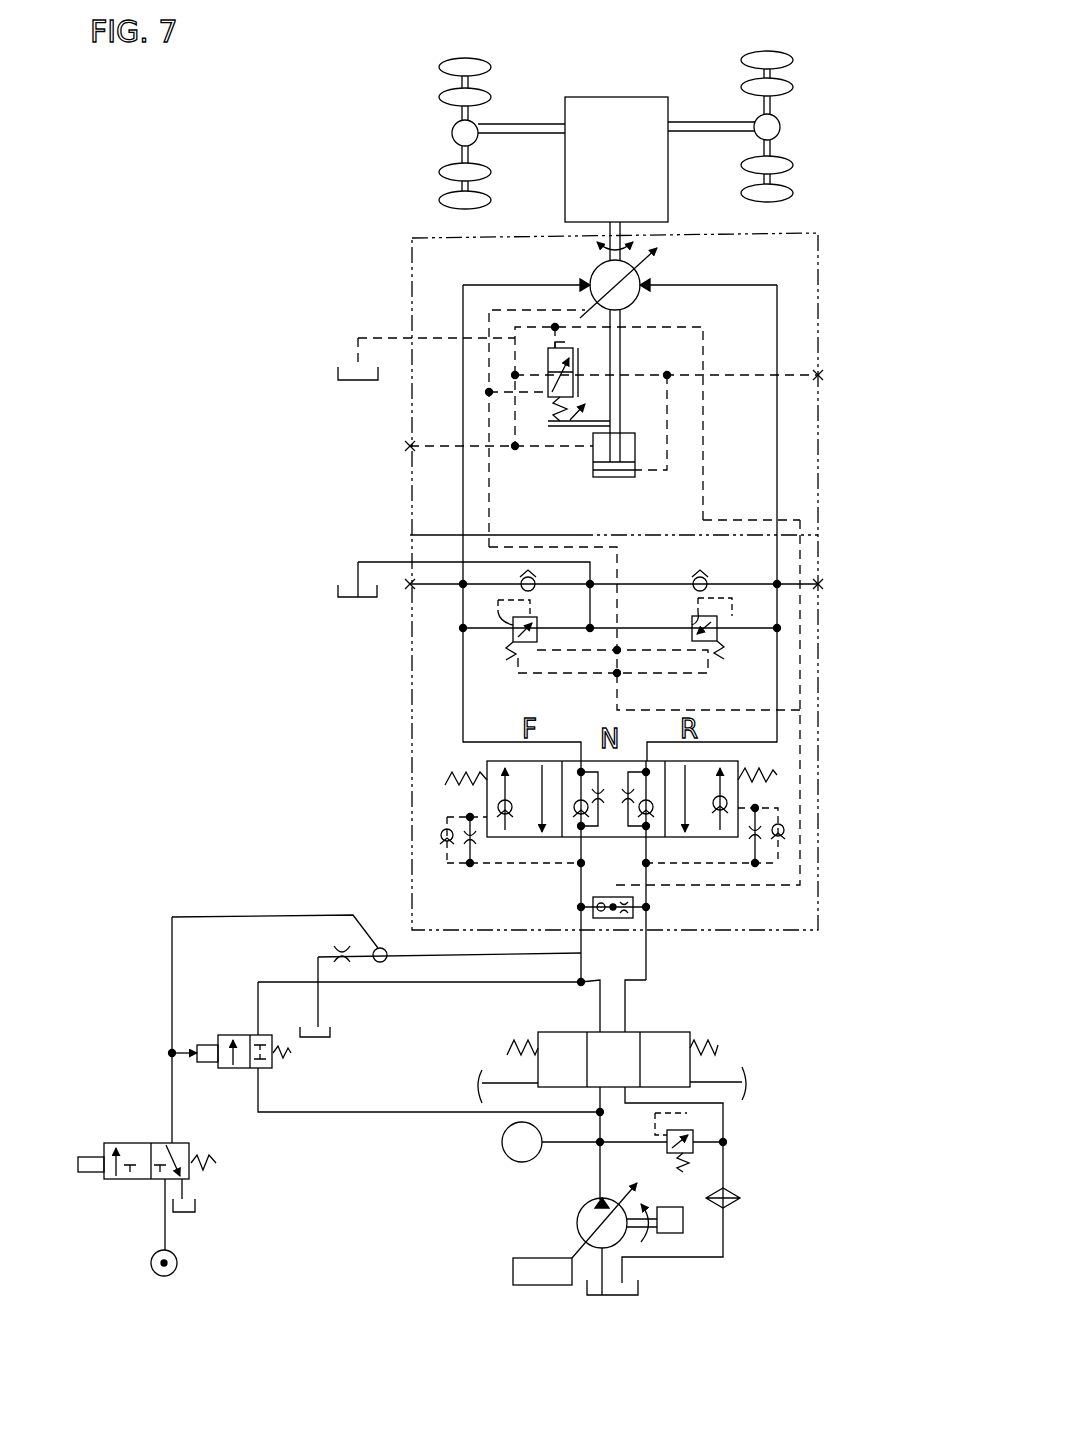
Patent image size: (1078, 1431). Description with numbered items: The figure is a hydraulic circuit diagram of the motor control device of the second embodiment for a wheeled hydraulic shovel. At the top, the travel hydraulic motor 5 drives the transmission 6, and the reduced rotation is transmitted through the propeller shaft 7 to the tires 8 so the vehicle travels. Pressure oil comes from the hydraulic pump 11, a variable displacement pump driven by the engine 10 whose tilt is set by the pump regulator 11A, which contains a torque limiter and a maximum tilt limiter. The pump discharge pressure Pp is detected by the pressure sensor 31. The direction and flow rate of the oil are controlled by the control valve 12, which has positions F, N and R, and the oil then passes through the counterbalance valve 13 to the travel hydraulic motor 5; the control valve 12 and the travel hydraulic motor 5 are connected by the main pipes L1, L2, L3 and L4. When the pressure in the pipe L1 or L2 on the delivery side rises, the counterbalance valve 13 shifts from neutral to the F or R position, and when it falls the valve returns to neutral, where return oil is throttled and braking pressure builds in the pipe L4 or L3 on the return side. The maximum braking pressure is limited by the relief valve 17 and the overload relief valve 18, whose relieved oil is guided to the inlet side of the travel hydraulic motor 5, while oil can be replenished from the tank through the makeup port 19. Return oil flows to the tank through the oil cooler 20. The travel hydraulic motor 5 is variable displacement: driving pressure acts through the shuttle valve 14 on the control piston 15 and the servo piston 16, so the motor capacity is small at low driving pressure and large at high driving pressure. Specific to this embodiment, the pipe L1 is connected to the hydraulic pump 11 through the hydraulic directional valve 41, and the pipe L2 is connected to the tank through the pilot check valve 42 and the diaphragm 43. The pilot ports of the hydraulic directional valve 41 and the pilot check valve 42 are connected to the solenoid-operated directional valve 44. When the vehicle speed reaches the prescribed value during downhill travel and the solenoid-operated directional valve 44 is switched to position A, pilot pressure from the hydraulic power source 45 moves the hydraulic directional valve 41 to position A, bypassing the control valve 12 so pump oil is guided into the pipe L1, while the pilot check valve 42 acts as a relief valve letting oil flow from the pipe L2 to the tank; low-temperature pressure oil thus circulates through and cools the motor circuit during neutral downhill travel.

The travel hydraulic motor 5 is at (642, 268).
The transmission 6 is at (668, 196).
The propeller shaft 7 is at (522, 136).
The tires 8 is at (440, 63).
The engine 10 is at (672, 1233).
The hydraulic pump 11 is at (577, 1228).
The pump regulator 11A is at (548, 1285).
The control valve 12 is at (690, 1035).
The counterbalance valve 13 is at (487, 768).
The shuttle valve 14 is at (606, 895).
The control piston 15 is at (593, 475).
The servo piston 16 is at (578, 356).
The relief valve 17 is at (506, 660).
The overload relief valve 18 is at (722, 660).
The makeup port 19 is at (410, 562).
The oil cooler 20 is at (732, 1205).
The pressure sensor 31 is at (504, 1152).
The hydraulic directional valve 41 is at (272, 1070).
The pilot check valve 42 is at (379, 964).
The diaphragm 43 is at (342, 945).
The solenoid-operated directional valve 44 is at (104, 1183).
The hydraulic power source 45 is at (178, 1268).
The main pipe L1 is at (578, 945).
The main pipe L2 is at (648, 940).
The main pipe L3 is at (463, 603).
The main pipe L4 is at (777, 477).